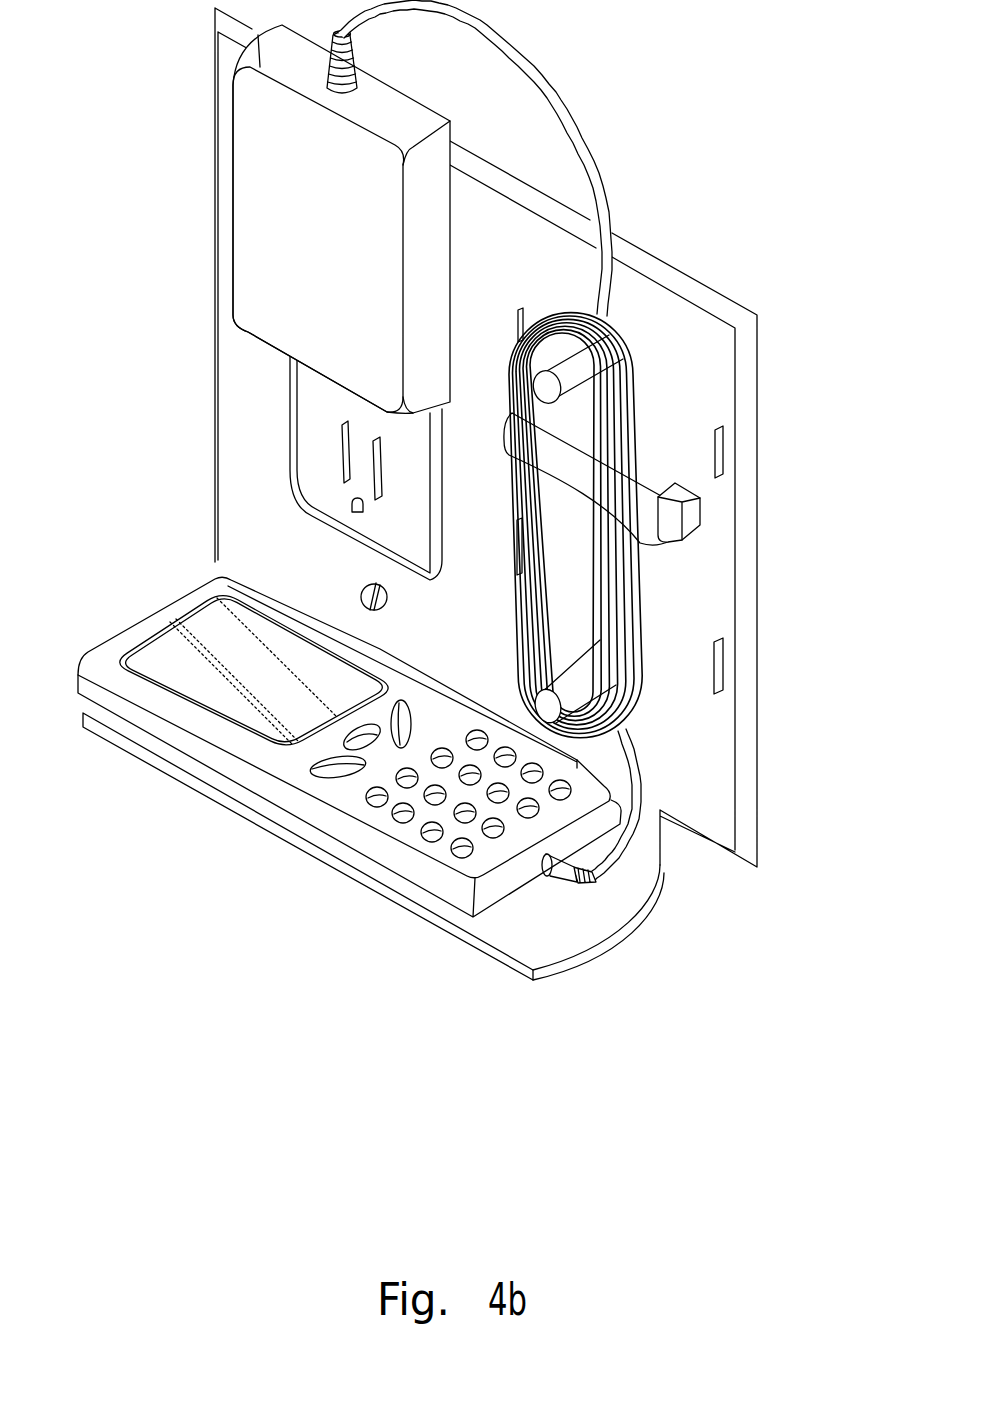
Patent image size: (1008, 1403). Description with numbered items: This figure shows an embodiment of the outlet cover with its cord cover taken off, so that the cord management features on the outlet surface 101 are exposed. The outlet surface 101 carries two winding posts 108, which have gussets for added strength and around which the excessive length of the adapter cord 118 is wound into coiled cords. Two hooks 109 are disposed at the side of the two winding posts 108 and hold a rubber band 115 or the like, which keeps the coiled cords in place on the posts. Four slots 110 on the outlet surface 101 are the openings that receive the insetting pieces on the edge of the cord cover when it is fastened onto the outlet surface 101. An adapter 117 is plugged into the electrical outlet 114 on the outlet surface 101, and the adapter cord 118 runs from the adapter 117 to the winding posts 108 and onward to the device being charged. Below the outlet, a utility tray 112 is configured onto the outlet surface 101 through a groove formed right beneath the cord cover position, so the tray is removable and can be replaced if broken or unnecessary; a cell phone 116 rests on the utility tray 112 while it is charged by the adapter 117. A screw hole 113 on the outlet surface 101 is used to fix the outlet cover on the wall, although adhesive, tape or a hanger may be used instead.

The outlet surface 101 is at (242, 362).
The winding posts 108 is at (568, 372).
The hooks 109 is at (677, 518).
The slots 110 is at (724, 442).
The utility tray 112 is at (550, 925).
The screw hole 113 is at (360, 590).
The electrical outlet 114 is at (318, 453).
The rubber band 115 is at (633, 543).
The cell phone 116 is at (293, 762).
The adapter 117 is at (265, 147).
The adapter cord 118 is at (555, 100).